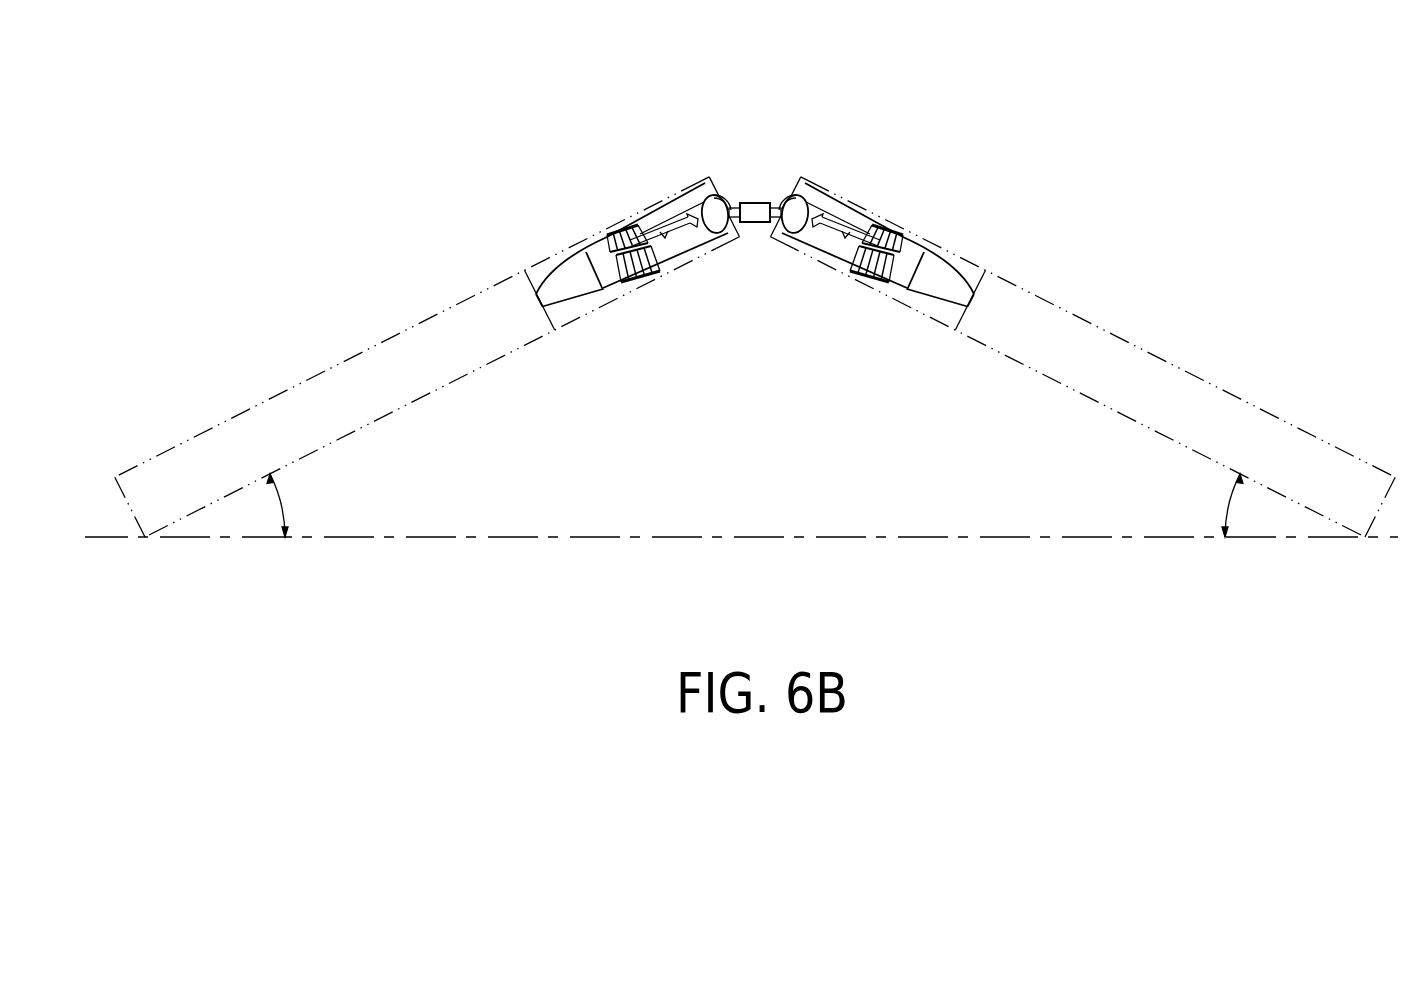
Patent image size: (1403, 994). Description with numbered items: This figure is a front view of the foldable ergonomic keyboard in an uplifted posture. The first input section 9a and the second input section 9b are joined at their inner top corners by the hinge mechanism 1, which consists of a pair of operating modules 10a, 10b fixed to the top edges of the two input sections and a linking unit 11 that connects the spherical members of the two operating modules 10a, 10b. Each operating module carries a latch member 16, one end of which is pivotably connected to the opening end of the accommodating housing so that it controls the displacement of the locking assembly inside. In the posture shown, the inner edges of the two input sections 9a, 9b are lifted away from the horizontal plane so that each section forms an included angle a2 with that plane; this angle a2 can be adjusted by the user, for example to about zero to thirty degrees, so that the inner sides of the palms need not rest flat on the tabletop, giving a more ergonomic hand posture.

The hinge mechanism 1 is at (865, 76).
The first input section 9a is at (310, 378).
The second input section 9b is at (1200, 378).
The operating module 10a is at (662, 191).
The operating module 10b is at (848, 191).
The linking unit 11 is at (759, 198).
The latch member 16 is at (560, 268).
The included angle a2 is at (755, 505).